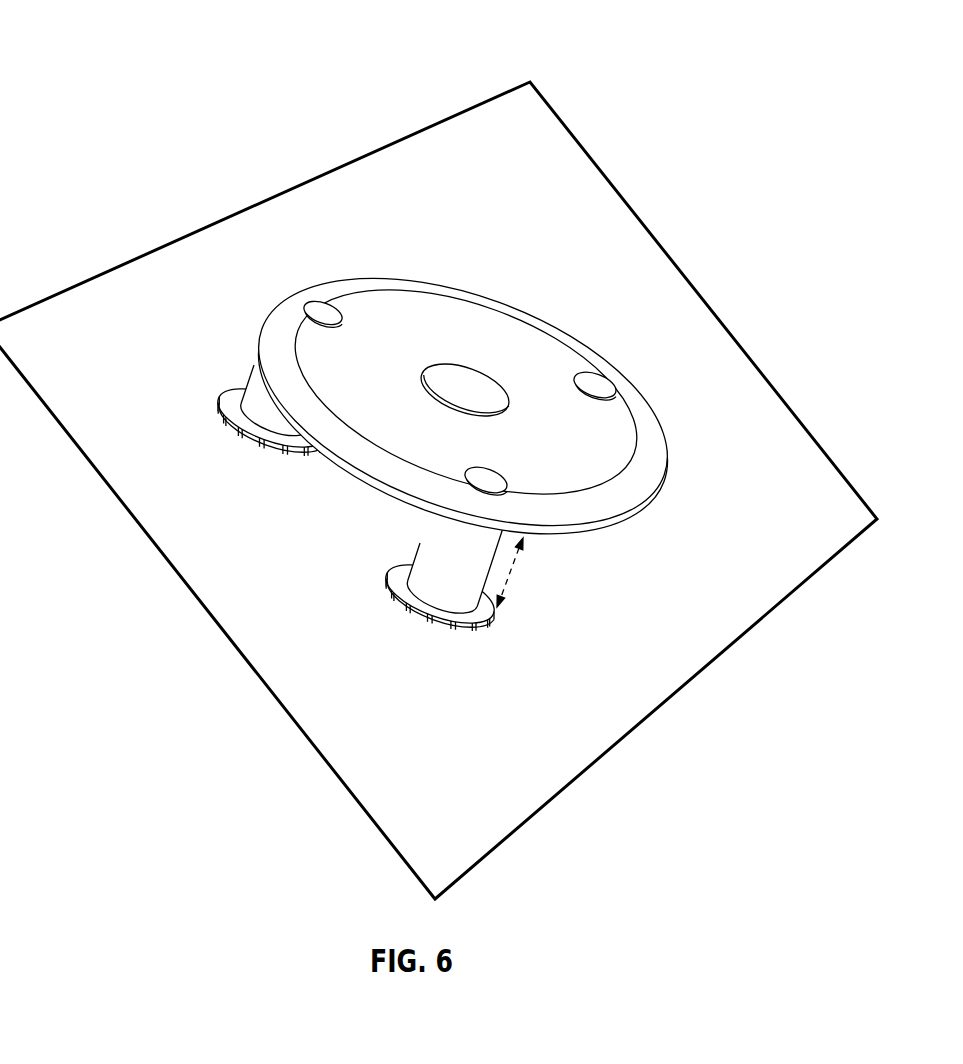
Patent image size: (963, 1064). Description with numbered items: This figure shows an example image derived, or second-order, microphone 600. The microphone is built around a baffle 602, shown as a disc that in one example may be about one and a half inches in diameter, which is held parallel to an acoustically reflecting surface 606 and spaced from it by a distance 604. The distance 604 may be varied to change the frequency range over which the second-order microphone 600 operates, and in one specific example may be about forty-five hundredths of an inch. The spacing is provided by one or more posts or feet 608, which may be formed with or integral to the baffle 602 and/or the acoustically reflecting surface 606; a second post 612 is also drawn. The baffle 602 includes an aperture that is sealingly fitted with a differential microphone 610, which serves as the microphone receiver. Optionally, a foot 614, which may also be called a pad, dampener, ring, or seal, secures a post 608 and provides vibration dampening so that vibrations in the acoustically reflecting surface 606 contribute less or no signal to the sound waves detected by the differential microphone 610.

The second-order microphone 600 is at (153, 51).
The baffle 602 is at (337, 372).
The distance 604 is at (513, 562).
The acoustically reflecting surface 606 is at (338, 491).
The feet 608 is at (250, 382).
The differential microphone 610 is at (463, 382).
The leg 612 is at (402, 472).
The foot 614 is at (238, 440).